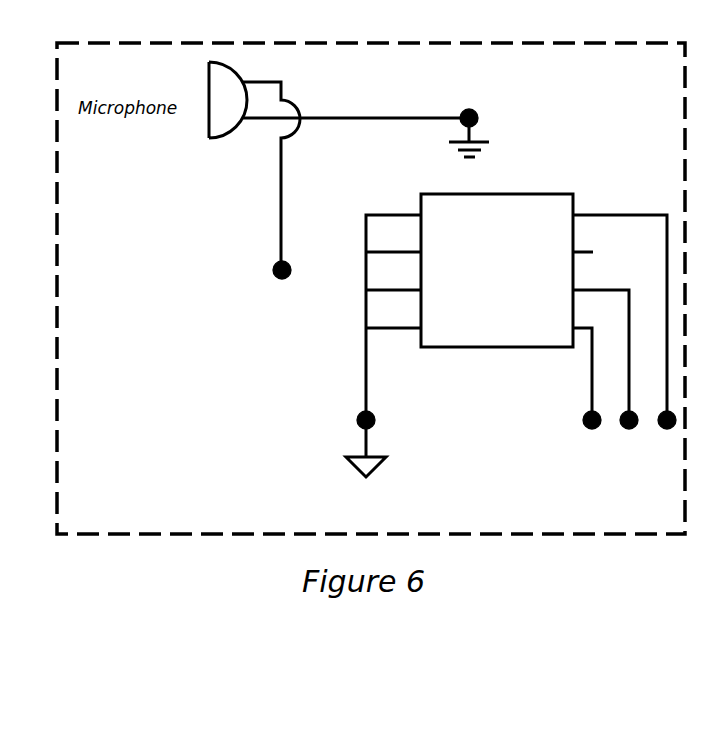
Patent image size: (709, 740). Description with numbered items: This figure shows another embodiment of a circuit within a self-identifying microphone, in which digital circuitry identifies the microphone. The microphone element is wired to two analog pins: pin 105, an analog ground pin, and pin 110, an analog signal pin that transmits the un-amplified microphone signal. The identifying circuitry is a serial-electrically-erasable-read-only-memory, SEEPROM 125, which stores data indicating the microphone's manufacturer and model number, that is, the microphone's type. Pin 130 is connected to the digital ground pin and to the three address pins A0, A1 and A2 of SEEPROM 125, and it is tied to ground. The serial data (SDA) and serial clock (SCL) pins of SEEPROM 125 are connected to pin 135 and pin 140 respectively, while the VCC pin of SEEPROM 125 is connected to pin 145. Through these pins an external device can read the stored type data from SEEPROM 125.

The pin 105 is at (477, 122).
The pin 110 is at (273, 272).
The serial-electrically-erasable-read-only-memory (SEEPROM) 125 is at (462, 347).
The pin 130 is at (356, 420).
The pin 135 is at (583, 422).
The pin 140 is at (625, 430).
The pin 145 is at (662, 432).